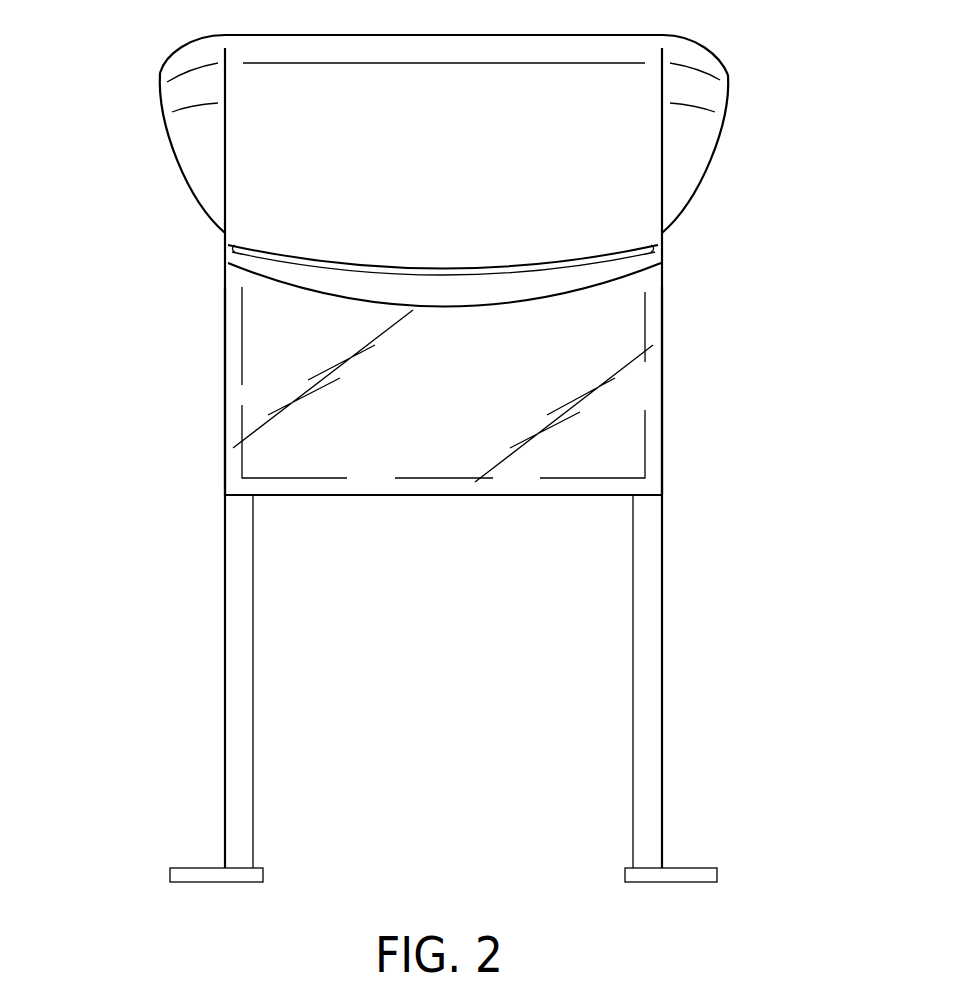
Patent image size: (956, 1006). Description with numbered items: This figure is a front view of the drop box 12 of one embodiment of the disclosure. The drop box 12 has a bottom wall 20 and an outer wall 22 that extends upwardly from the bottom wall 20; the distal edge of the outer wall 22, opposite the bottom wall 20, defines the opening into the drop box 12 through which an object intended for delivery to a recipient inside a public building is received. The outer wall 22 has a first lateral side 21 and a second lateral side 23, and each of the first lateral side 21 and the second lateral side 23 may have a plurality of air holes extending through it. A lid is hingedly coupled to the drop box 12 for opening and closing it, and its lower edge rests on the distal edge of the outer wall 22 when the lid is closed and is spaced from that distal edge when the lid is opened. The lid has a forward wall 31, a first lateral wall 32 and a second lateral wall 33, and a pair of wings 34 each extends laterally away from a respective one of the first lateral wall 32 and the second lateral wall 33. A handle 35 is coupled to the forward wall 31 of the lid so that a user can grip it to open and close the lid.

The drop box 12 is at (662, 327).
The bottom wall 20 is at (597, 495).
The first lateral side 21 is at (223, 425).
The outer wall 22 is at (265, 385).
The second lateral side 23 is at (662, 393).
The forward wall 31 is at (618, 208).
The first lateral wall 32 is at (223, 188).
The second lateral wall 33 is at (662, 132).
The wings 34 is at (163, 124).
The handle 35 is at (447, 277).